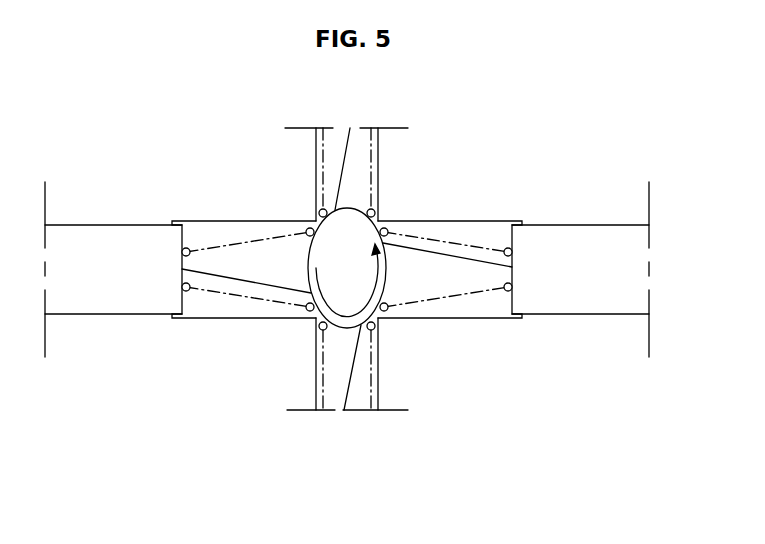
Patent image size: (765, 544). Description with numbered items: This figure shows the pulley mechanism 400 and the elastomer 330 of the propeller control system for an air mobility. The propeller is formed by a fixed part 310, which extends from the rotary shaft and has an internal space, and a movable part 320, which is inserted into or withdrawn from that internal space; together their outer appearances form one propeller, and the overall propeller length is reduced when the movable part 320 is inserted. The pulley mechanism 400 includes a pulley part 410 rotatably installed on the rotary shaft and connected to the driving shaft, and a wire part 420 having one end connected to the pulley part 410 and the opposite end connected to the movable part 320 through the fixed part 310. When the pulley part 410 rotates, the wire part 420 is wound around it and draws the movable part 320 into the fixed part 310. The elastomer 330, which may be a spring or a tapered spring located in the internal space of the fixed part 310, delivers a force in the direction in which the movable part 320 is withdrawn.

The fixed part 310 is at (205, 220).
The movable part 320 is at (120, 240).
The elastomer 330 is at (267, 238).
The pulley mechanism 400 is at (347, 323).
The pulley part 410 is at (350, 296).
The wire part 420 is at (425, 253).